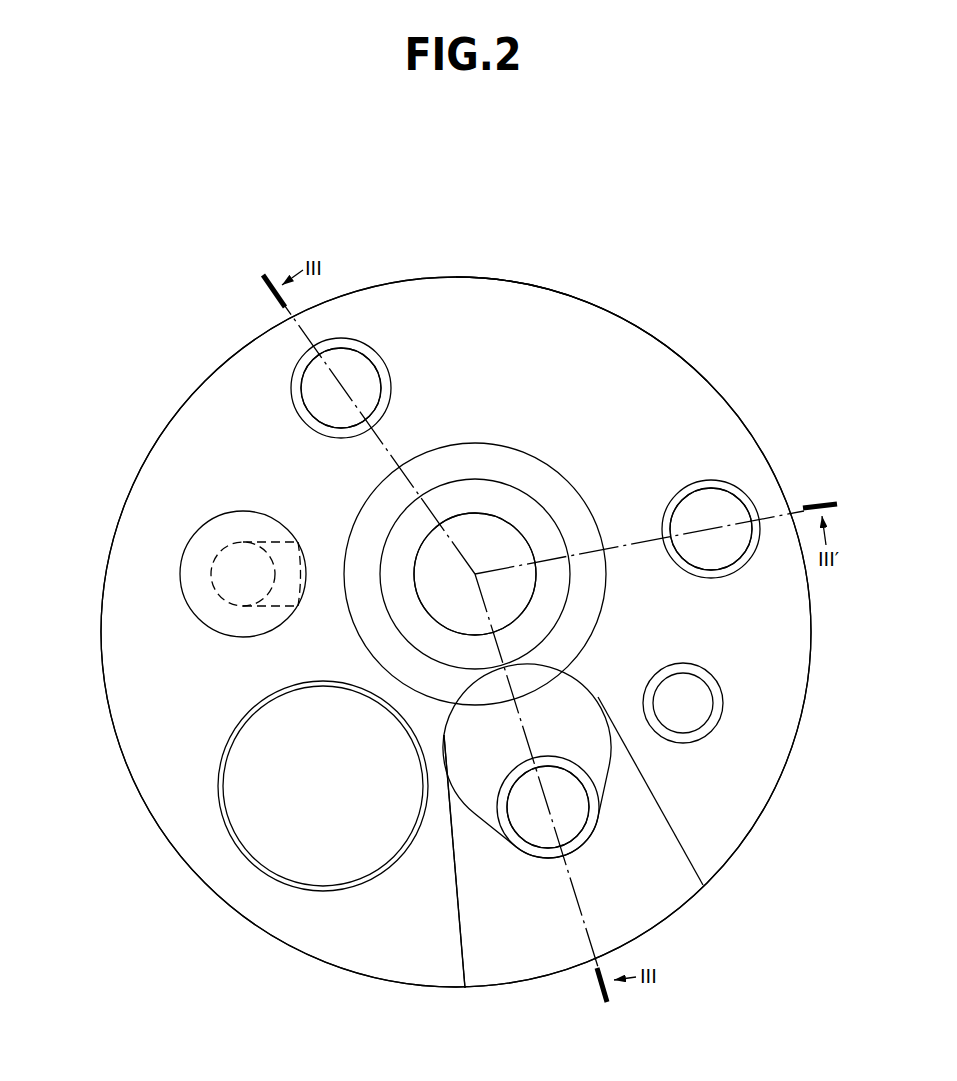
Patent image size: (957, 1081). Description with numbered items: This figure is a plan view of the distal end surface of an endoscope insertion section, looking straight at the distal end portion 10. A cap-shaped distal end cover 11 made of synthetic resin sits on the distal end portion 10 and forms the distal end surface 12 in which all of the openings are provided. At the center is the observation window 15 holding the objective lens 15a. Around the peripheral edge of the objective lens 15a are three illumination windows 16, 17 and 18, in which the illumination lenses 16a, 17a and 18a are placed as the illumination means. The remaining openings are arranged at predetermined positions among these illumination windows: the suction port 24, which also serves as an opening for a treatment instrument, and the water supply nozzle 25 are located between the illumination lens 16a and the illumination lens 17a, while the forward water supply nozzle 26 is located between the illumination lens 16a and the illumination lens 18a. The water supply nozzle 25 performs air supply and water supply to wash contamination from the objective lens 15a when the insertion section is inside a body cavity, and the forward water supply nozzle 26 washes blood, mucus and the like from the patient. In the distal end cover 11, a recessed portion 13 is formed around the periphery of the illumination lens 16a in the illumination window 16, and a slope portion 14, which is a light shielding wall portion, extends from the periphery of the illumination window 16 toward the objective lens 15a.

The distal end portion 10 is at (677, 316).
The distal end cover 11 is at (712, 384).
The distal end surface 12 is at (583, 304).
The recessed portion 13 is at (540, 910).
The slope portion 14 is at (480, 762).
The observation window 15 is at (450, 520).
The objective lens 15a is at (475, 530).
The illumination window 16 is at (585, 795).
The illumination lens 16a is at (554, 813).
The illumination window 17 is at (316, 358).
The illumination lens 17a is at (337, 386).
The illumination window 18 is at (727, 490).
The illumination lens 18a is at (716, 524).
The suction port 24 is at (355, 828).
The water supply nozzle 25 is at (190, 578).
The forward water supply nozzle 26 is at (699, 705).